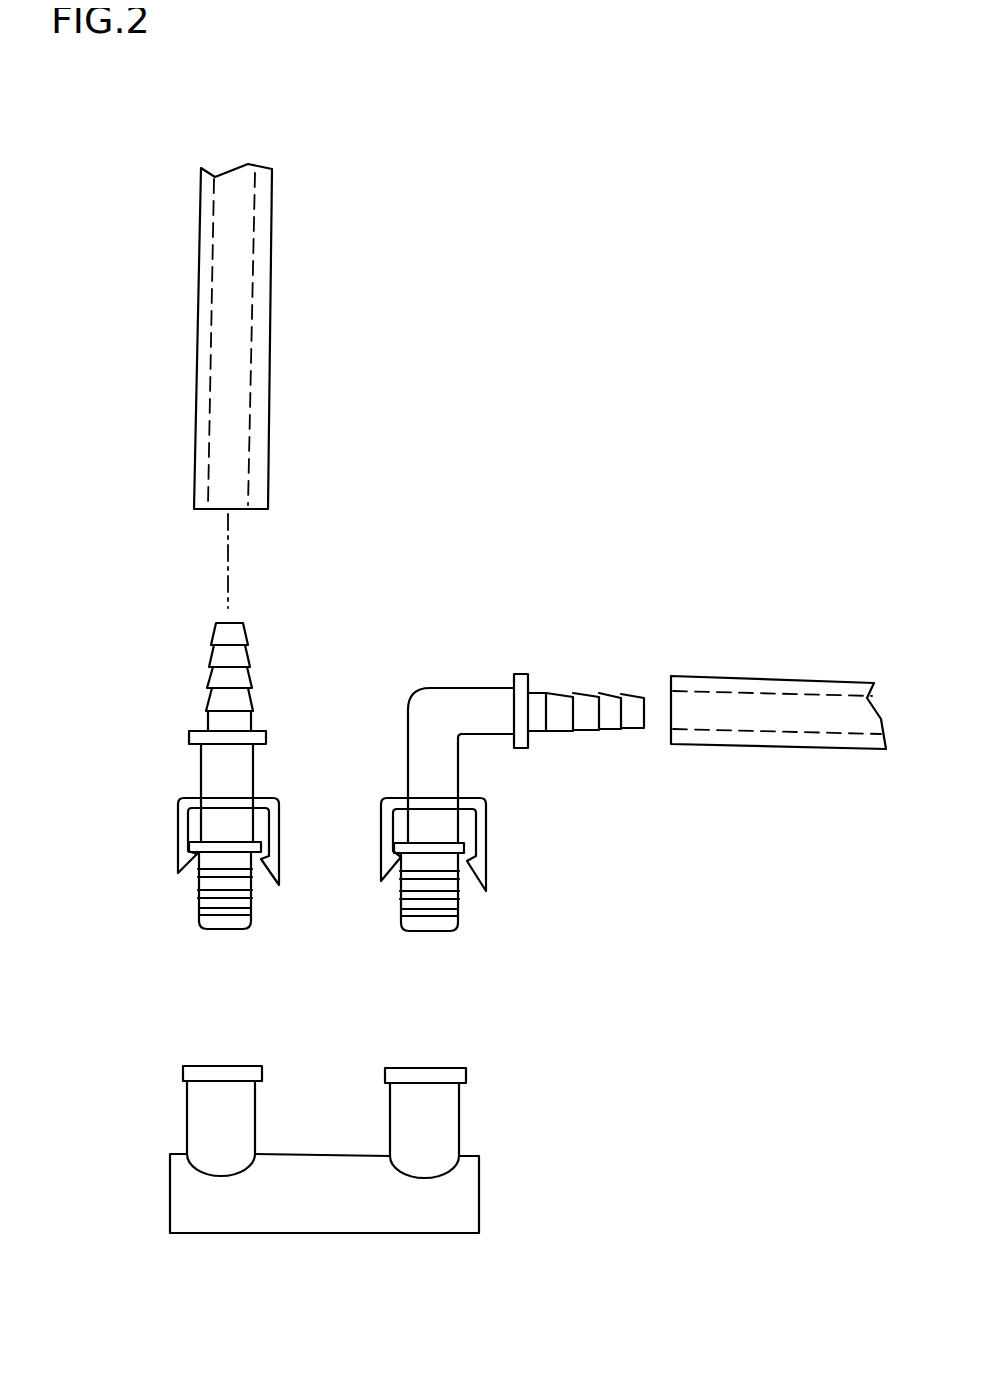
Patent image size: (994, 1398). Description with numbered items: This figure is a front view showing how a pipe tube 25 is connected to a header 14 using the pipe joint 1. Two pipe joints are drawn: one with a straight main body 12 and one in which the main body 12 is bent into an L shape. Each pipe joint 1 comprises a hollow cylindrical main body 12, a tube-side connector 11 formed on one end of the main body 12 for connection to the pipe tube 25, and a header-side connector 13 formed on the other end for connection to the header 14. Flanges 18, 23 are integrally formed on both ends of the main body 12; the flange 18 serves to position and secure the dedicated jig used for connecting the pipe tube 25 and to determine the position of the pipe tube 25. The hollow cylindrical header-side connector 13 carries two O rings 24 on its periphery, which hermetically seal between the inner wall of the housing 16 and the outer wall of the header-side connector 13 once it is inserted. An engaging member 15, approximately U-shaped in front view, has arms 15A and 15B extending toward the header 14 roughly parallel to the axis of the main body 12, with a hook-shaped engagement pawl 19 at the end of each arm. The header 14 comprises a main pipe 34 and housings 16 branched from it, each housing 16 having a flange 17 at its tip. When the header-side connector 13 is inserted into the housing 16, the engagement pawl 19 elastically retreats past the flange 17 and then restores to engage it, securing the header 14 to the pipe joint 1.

The pipe joint 1 is at (333, 612).
The tube-side connector 11 is at (248, 658).
The main body 12 is at (252, 776).
The header-side connector 13 is at (458, 894).
The header 14 is at (468, 1195).
The engaging member 15 is at (177, 806).
The arm 15A is at (277, 842).
The arm 15B is at (177, 855).
The housing 16 is at (186, 1117).
The flange 17 is at (182, 1072).
The flange 18 is at (265, 734).
The engagement pawl 19 is at (177, 872).
The flange 23 is at (190, 845).
The O ring 24 is at (195, 903).
The pipe tube 25 is at (271, 322).
The main pipe 34 is at (468, 1168).